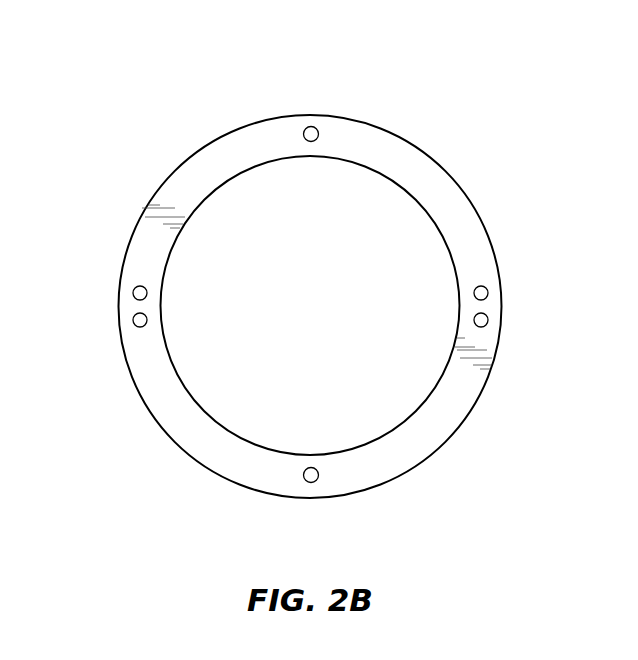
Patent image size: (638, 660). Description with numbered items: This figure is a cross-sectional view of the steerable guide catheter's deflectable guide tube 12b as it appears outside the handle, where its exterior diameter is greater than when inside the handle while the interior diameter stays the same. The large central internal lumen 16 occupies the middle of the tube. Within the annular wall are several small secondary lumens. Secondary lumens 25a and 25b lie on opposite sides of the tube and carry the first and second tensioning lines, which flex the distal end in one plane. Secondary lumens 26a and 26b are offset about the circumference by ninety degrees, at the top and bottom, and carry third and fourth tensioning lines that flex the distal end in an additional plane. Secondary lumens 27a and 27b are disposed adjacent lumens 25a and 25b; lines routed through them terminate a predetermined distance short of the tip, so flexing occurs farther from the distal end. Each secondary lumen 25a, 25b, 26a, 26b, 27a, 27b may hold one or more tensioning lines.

The guide tube (outside the handle) 12b is at (447, 123).
The internal lumen 16 is at (413, 230).
The secondary lumen 26a is at (311, 126).
The secondary lumen 26b is at (315, 482).
The secondary lumen 25a is at (488, 293).
The secondary lumen 27a is at (488, 320).
The secondary lumen 27b is at (133, 293).
The secondary lumen 25b is at (133, 321).